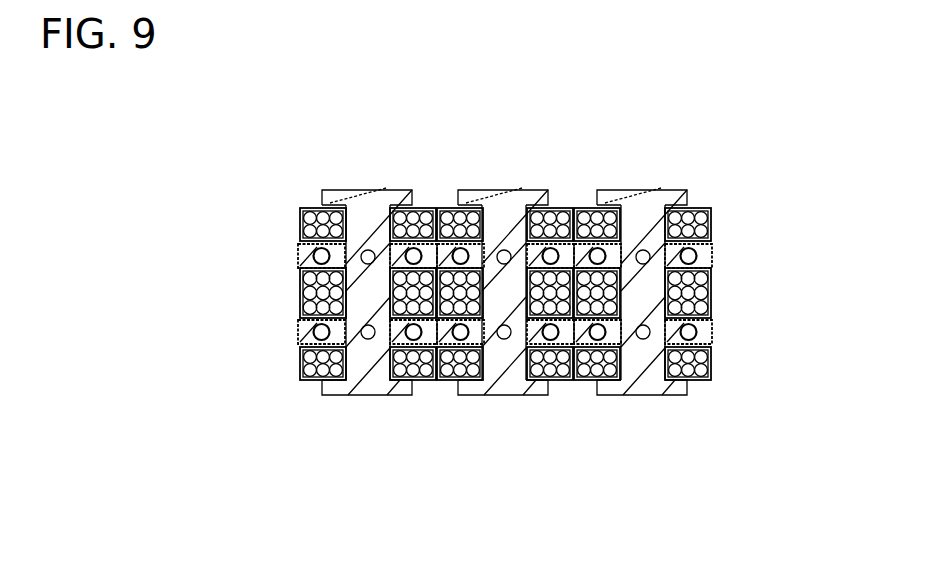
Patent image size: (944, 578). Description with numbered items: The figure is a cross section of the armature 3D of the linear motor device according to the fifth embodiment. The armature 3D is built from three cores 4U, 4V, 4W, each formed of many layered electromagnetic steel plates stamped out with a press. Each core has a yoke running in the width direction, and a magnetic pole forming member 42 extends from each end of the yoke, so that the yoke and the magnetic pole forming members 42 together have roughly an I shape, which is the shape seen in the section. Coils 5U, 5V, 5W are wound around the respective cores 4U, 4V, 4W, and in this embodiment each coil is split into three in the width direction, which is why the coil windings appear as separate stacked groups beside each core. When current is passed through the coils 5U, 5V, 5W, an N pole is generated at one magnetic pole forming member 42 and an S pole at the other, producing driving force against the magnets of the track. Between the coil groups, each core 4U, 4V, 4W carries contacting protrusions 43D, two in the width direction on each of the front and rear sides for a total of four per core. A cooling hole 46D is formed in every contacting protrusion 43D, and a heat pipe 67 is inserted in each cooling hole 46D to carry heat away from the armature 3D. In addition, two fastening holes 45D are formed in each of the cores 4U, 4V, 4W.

The armature 3D is at (750, 161).
The magnetic pole forming member 42 is at (328, 200).
The contacting protrusion 43D is at (298, 325).
The fastening hole 45D is at (378, 352).
The cooling hole 46D is at (495, 300).
The heat pipe 67 is at (300, 252).
The core 4U is at (365, 396).
The core 4V is at (490, 396).
The core 4W is at (635, 396).
The coil 5U is at (308, 378).
The coil 5V is at (447, 380).
The coil 5W is at (583, 380).